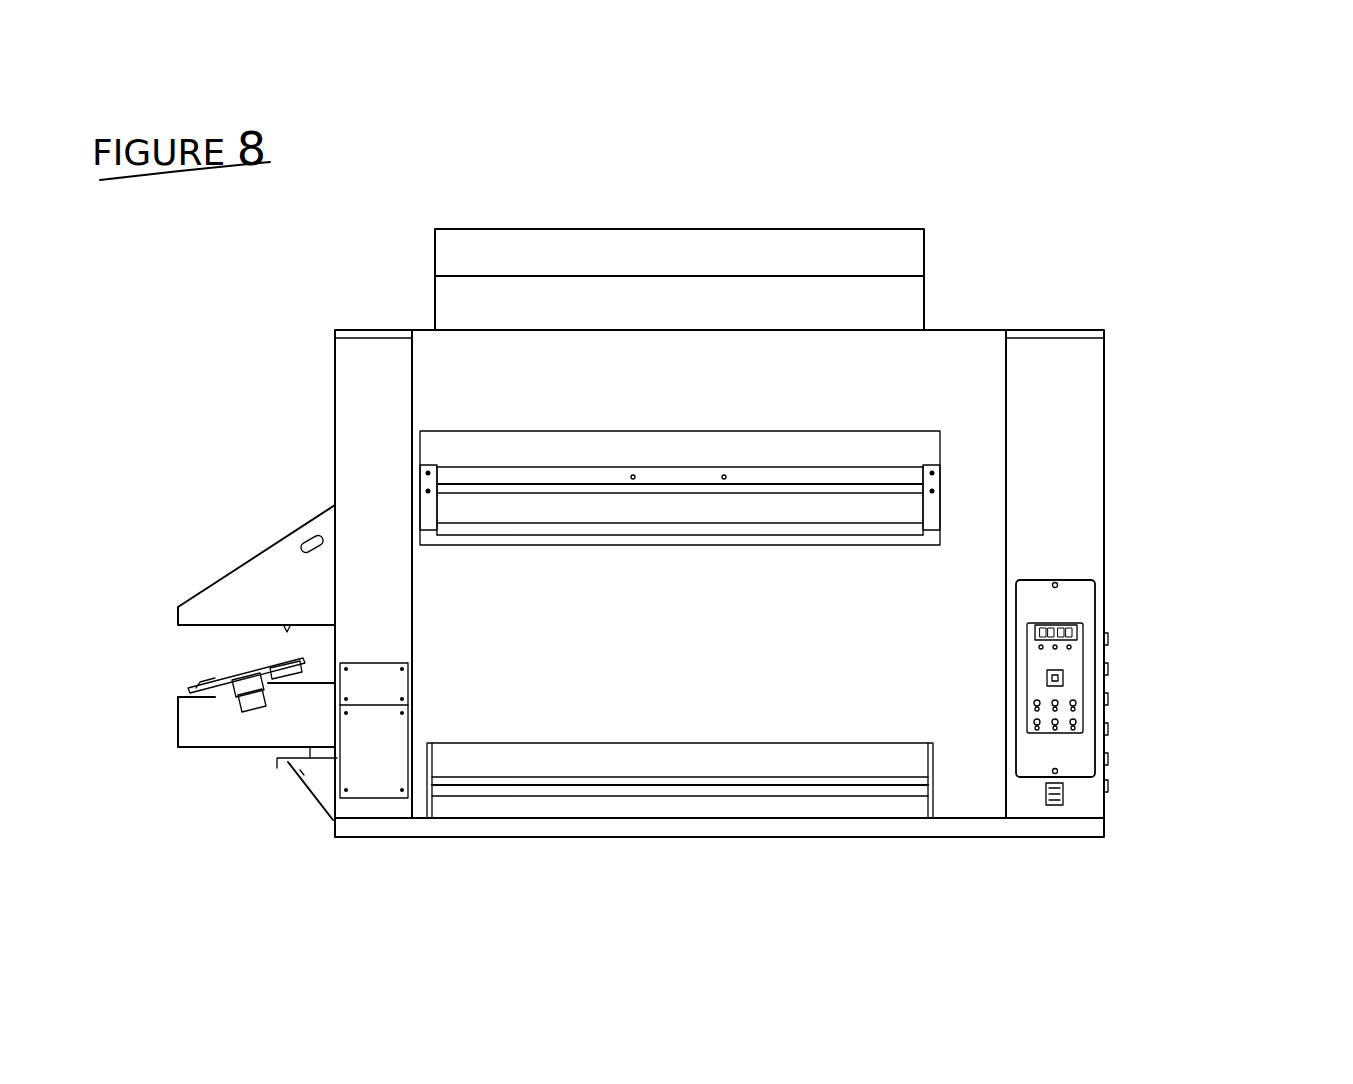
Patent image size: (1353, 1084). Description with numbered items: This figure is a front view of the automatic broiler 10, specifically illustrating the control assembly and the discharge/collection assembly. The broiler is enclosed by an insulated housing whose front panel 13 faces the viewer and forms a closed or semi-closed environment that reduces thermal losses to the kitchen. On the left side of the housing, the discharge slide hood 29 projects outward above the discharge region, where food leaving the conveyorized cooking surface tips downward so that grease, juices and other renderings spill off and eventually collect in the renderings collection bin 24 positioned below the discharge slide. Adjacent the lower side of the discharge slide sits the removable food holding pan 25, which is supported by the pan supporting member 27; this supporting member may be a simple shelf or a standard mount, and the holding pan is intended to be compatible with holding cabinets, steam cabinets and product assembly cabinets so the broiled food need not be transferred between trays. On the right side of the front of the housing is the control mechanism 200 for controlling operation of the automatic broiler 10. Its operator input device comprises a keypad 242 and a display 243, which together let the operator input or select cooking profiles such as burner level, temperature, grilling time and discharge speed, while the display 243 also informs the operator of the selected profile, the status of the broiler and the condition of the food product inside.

The automatic broiler 10 is at (1197, 348).
The front panel 13 is at (971, 380).
The discharge slide hood 29 is at (262, 547).
The food holding pan 25 is at (207, 678).
The pan supporting member 27 is at (208, 737).
The renderings collection bin 24 is at (298, 770).
The control mechanism 200 is at (1086, 760).
The display 243 is at (1078, 625).
The keypad 242 is at (1075, 680).